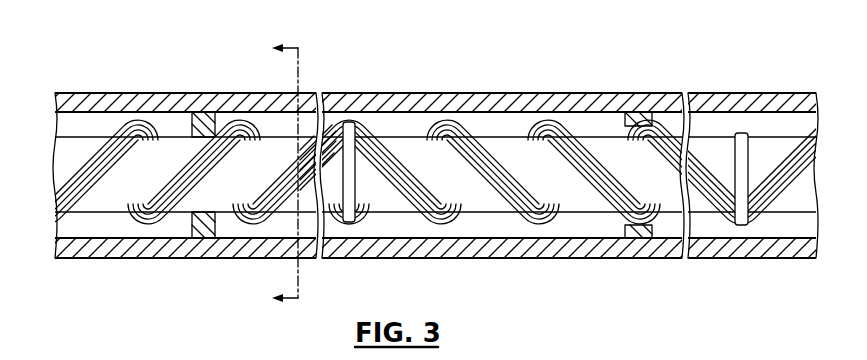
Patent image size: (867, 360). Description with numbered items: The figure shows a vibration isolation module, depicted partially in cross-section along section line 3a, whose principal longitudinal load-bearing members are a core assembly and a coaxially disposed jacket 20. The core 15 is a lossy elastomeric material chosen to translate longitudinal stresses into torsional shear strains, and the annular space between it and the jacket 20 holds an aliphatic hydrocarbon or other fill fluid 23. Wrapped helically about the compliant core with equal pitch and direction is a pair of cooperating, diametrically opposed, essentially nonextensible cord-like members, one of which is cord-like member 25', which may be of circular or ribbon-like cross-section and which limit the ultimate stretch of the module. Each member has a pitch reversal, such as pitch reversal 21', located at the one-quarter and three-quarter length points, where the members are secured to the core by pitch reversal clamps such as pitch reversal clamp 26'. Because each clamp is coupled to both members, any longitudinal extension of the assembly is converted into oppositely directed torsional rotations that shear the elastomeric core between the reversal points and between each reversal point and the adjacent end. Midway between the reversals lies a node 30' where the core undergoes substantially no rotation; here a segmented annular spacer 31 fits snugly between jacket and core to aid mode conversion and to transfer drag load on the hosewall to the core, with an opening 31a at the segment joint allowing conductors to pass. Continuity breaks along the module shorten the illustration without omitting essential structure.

The core 15 is at (500, 137).
The jacket 20 is at (92, 92).
The fill fluid 23 is at (172, 120).
The annular spacer 31 is at (200, 112).
The opening 31a is at (205, 240).
The node 30' is at (393, 172).
The pitch reversal 21' is at (383, 125).
The cord-like member 25' is at (522, 136).
The pitch reversal clamp 26' is at (345, 134).
The section line 3a- 3a is at (269, 172).